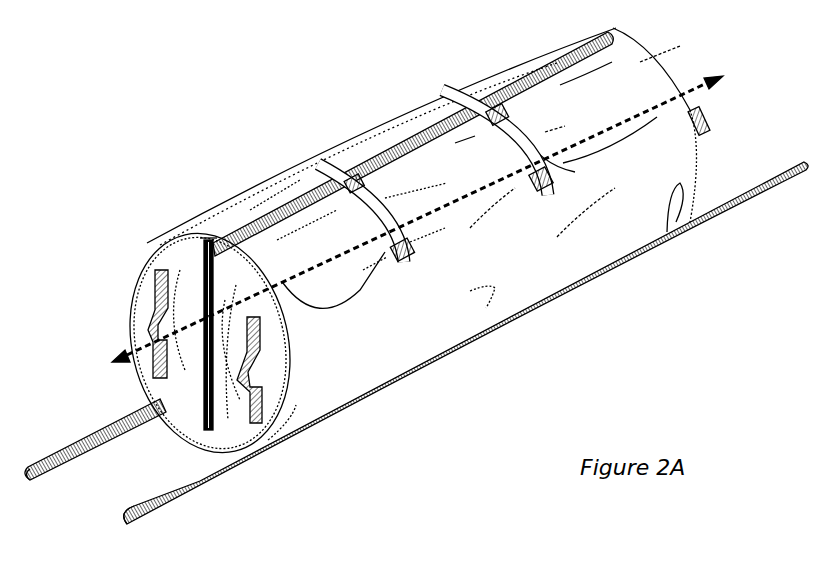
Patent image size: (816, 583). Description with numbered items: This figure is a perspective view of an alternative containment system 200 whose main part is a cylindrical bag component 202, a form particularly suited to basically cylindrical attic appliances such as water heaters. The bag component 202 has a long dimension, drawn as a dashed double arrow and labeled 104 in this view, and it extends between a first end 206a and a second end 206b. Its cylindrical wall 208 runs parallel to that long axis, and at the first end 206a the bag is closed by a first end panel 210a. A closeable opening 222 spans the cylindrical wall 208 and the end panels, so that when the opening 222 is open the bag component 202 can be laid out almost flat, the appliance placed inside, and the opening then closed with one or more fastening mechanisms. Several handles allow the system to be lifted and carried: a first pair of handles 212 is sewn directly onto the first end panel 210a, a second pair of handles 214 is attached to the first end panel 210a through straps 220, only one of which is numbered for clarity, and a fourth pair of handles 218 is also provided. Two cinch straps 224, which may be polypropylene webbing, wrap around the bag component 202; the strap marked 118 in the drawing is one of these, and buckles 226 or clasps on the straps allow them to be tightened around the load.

The containment system 200 is at (334, 64).
The cylindrical bag component 202 is at (440, 346).
The longitudinal axis 104 is at (720, 82).
The second strap 118 is at (563, 142).
The cylindrical wall 208 is at (612, 89).
The first end panel 210a is at (210, 342).
The first pair of handles 212 is at (257, 347).
The second pair of handles 214 is at (122, 522).
The fourth pair of handles 218 is at (793, 174).
The straps 220 is at (145, 420).
The closeable opening 222 is at (527, 75).
The cinch straps 224 is at (340, 185).
The buckles 226 is at (360, 183).
The first end 206a is at (293, 426).
The second end 206b is at (696, 214).